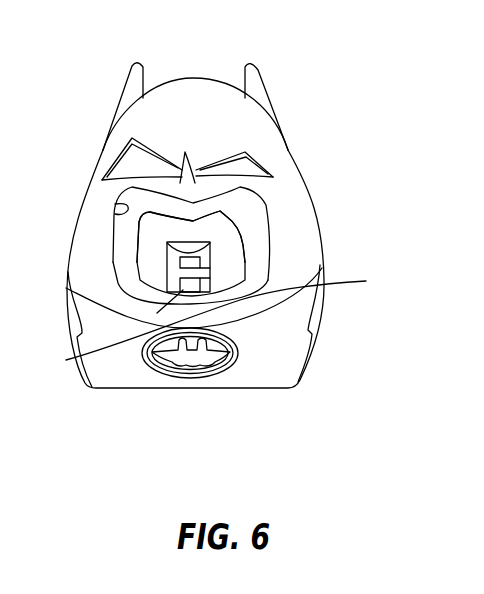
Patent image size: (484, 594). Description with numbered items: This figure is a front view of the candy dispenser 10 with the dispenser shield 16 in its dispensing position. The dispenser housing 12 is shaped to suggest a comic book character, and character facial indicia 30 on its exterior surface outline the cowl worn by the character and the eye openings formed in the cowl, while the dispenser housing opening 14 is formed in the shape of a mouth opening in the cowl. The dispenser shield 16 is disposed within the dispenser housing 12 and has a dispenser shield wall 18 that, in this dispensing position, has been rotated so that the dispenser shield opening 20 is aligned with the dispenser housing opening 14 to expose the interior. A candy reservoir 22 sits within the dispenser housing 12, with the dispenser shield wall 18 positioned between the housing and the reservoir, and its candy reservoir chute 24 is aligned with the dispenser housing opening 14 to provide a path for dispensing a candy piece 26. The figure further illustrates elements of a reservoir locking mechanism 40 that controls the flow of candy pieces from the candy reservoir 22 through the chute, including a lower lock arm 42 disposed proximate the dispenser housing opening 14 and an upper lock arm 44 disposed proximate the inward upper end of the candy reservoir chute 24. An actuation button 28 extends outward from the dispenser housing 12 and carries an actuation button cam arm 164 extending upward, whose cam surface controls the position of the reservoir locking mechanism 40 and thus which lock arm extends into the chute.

The candy dispenser 10 is at (78, 157).
The dispenser housing 12 is at (194, 77).
The dispenser housing opening 14 is at (112, 212).
The dispenser shield 16 is at (257, 222).
The dispenser shield wall 18 is at (257, 222).
The dispenser shield opening 20 is at (288, 148).
The candy reservoir 22 is at (230, 268).
The candy reservoir chute 24 is at (167, 284).
The candy piece 26 is at (205, 245).
The actuation button 28 is at (180, 367).
The character facial indicia 30 is at (128, 148).
The reservoir locking mechanism 40 is at (213, 278).
The lower lock arm 42 is at (66, 360).
The upper lock arm 44 is at (167, 257).
The actuation button cam arm 164 is at (220, 368).